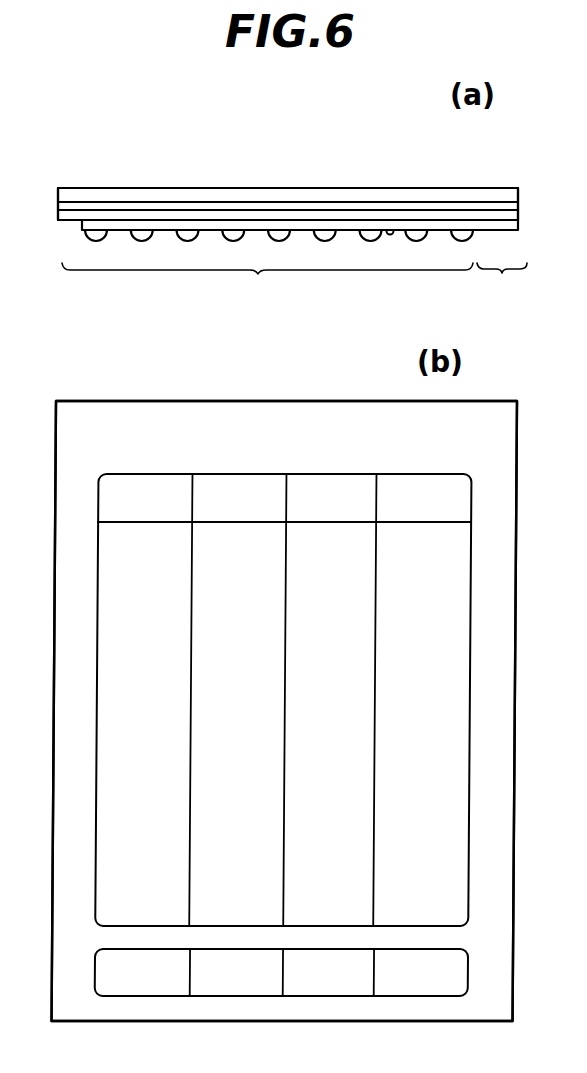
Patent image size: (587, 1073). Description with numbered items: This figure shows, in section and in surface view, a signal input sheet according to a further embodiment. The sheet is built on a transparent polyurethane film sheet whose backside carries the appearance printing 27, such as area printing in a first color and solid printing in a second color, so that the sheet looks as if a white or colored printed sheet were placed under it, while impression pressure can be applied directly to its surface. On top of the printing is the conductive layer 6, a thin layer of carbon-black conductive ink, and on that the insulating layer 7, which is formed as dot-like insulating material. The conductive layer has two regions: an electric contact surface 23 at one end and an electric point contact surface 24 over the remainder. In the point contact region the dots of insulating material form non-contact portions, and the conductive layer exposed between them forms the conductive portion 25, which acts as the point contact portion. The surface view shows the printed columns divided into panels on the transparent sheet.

The appearance printing 27 is at (218, 210).
The conductive layer 6 is at (343, 227).
The insulating layer 7 is at (413, 232).
The conductive portion 25 is at (393, 230).
The electric point contact surface 24 is at (267, 286).
The electric contact surface 23 is at (502, 286).